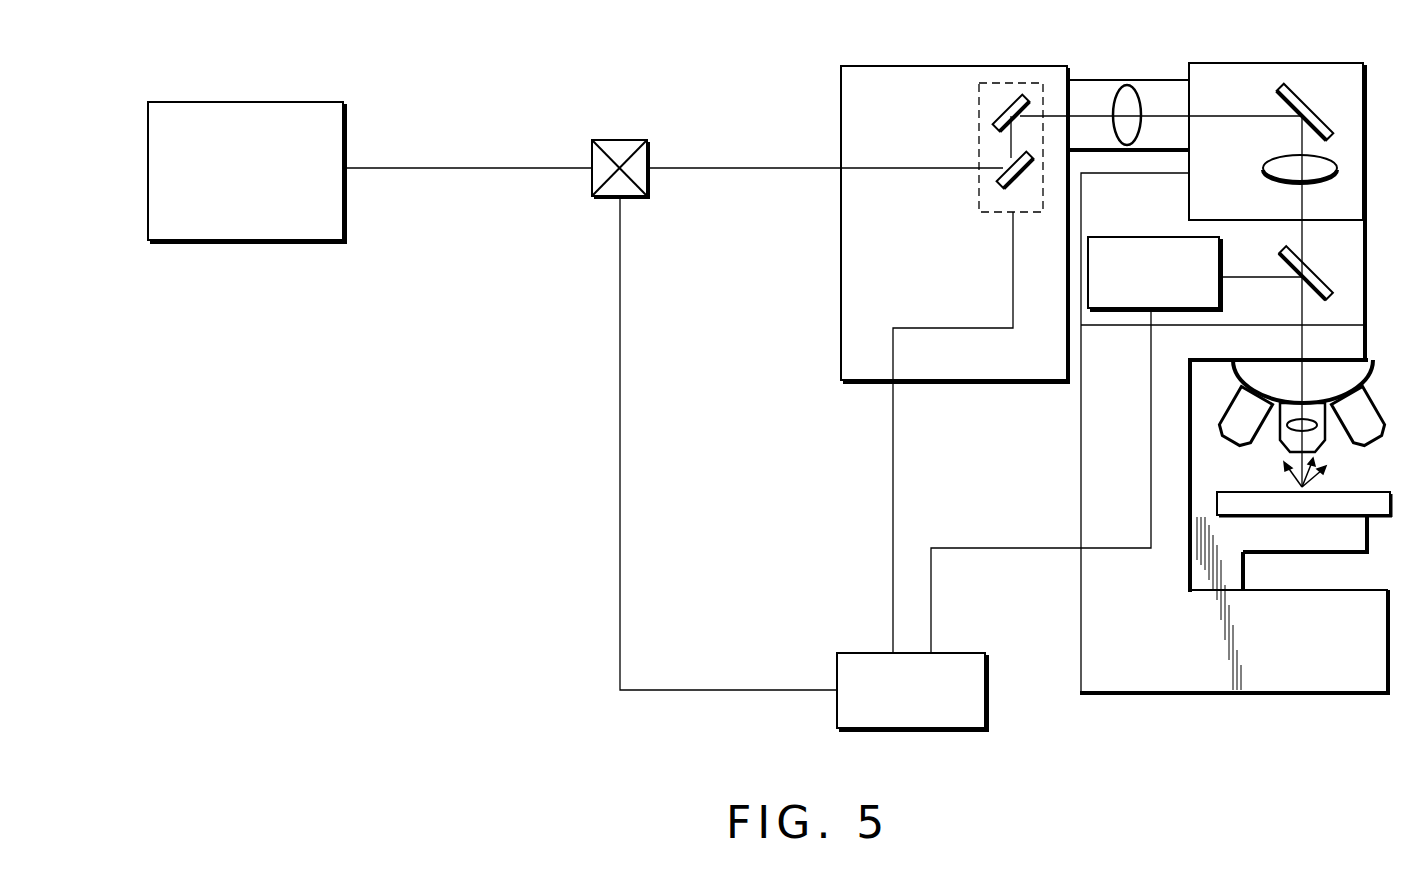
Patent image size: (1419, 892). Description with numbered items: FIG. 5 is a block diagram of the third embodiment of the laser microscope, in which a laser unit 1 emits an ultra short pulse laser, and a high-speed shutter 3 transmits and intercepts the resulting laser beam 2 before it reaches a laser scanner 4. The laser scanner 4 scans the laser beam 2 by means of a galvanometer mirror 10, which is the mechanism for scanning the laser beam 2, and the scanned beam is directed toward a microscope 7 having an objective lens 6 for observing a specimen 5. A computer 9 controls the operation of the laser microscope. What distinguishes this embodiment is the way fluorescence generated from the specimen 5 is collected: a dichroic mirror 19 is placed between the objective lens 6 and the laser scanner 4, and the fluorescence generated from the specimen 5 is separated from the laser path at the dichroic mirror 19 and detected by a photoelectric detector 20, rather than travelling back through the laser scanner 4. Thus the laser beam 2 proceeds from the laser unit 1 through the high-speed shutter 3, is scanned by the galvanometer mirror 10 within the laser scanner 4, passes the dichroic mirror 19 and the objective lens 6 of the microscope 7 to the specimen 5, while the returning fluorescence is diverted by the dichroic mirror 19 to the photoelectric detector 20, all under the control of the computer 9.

The laser unit 1 is at (248, 101).
The laser beam 2 is at (481, 170).
The high-speed shutter 3 is at (618, 138).
The laser scanner 4 is at (886, 66).
The specimen 5 is at (1322, 487).
The objective lens 6 is at (1330, 445).
The microscope 7 is at (1367, 302).
The computer 9 is at (985, 688).
The galvanometer mirror 10 is at (1013, 82).
The dichroic mirror 19 is at (1320, 276).
The photoelectric detector 20 is at (1222, 250).